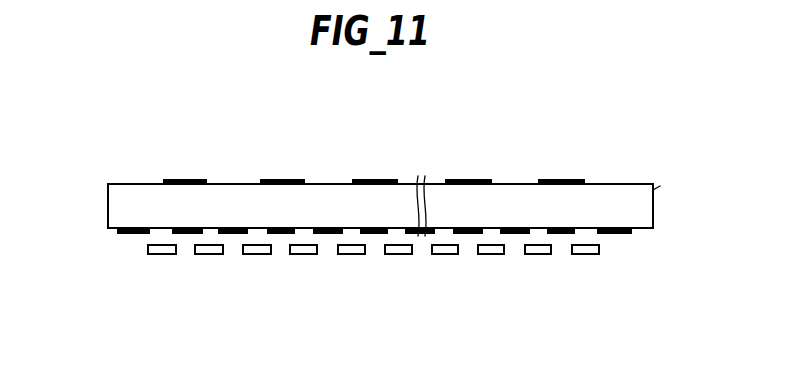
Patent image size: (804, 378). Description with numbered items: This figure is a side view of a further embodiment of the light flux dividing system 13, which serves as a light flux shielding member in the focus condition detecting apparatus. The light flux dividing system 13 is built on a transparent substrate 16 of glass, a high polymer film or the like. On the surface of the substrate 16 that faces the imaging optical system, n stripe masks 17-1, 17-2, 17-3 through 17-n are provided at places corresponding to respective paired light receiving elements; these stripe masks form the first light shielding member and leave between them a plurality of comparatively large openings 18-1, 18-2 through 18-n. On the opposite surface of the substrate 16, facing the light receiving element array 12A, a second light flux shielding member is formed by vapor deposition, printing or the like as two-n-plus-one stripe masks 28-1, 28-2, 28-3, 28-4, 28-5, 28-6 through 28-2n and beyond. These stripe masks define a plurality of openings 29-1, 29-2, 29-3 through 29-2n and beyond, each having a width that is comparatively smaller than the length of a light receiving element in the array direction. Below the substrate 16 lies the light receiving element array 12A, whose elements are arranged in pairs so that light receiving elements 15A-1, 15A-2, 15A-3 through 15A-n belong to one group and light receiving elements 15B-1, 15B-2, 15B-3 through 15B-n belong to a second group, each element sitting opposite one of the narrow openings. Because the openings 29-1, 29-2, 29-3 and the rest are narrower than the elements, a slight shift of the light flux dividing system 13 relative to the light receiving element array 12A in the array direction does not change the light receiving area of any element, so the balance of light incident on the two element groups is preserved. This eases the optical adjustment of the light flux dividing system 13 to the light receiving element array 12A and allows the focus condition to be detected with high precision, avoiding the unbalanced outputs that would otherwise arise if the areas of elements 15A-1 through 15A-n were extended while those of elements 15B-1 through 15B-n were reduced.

The light receiving element array 12A is at (606, 252).
The light flux dividing system 13 is at (667, 187).
The transparent substrate 16 is at (627, 190).
The stripe mask 17-1 is at (185, 178).
The stripe mask 17-2 is at (282, 178).
The stripe mask 17-3 is at (373, 177).
The stripe mask 17-n is at (560, 178).
The opening 18-1 is at (133, 182).
The opening 18-2 is at (233, 182).
The opening 18-n is at (510, 182).
The stripe mask 28-1 is at (123, 237).
The stripe mask 28-2 is at (183, 235).
The stripe mask 28-3 is at (233, 235).
The stripe mask 28-4 is at (280, 235).
The stripe mask 28-5 is at (327, 228).
The stripe mask 28-6 is at (377, 228).
The stripe mask 28-2n is at (560, 236).
The opening 29-1 is at (117, 231).
The opening 29-2 is at (166, 233).
The opening 29-3 is at (203, 229).
The opening 29-2n is at (538, 231).
The light receiving element 15A-1 is at (157, 255).
The light receiving element 15B-1 is at (208, 255).
The light receiving element 15A-2 is at (258, 255).
The light receiving element 15B-2 is at (313, 255).
The light receiving element 15A-3 is at (348, 255).
The light receiving element 15B-3 is at (395, 255).
The light receiving element 15A-n is at (537, 256).
The light receiving element 15B-n is at (580, 256).